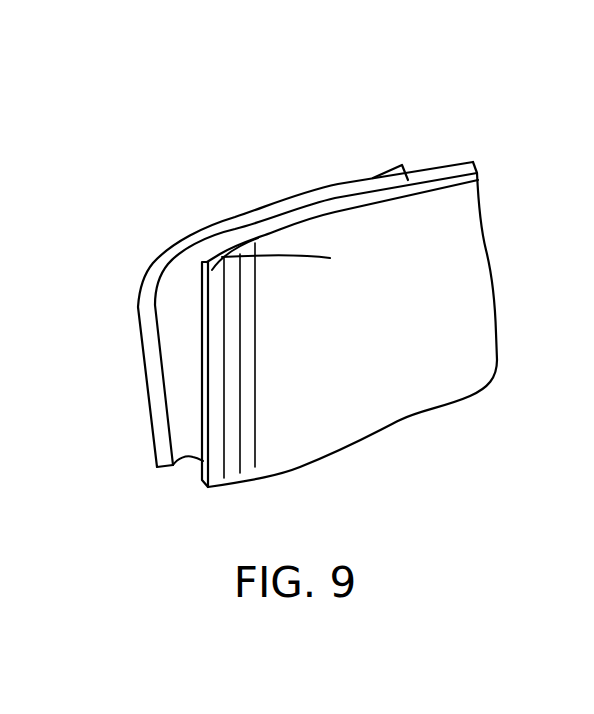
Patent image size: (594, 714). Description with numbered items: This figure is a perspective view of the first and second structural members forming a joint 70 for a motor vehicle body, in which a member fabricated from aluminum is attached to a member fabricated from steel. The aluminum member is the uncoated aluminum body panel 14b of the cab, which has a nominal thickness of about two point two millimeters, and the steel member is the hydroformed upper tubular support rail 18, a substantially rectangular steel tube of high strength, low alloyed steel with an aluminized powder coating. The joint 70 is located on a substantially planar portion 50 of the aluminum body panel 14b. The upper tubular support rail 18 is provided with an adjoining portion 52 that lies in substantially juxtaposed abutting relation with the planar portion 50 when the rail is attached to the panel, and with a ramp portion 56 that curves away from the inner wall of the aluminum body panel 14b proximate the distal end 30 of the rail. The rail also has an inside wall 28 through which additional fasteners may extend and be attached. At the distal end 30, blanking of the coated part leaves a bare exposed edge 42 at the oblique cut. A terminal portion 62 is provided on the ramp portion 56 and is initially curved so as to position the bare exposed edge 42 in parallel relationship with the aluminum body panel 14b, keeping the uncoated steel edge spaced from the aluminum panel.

The joint 70 is at (178, 178).
The planar portion 50 is at (322, 200).
The adjoining portion 52 is at (278, 226).
The inside wall 28 is at (387, 223).
The upper tubular support rail 18 is at (450, 218).
The bare exposed edge 42 is at (203, 303).
The terminal portion 62 is at (206, 266).
The ramp portion 56 is at (300, 256).
The distal end 30 is at (235, 302).
The uncoated aluminum body panel 14b is at (170, 360).